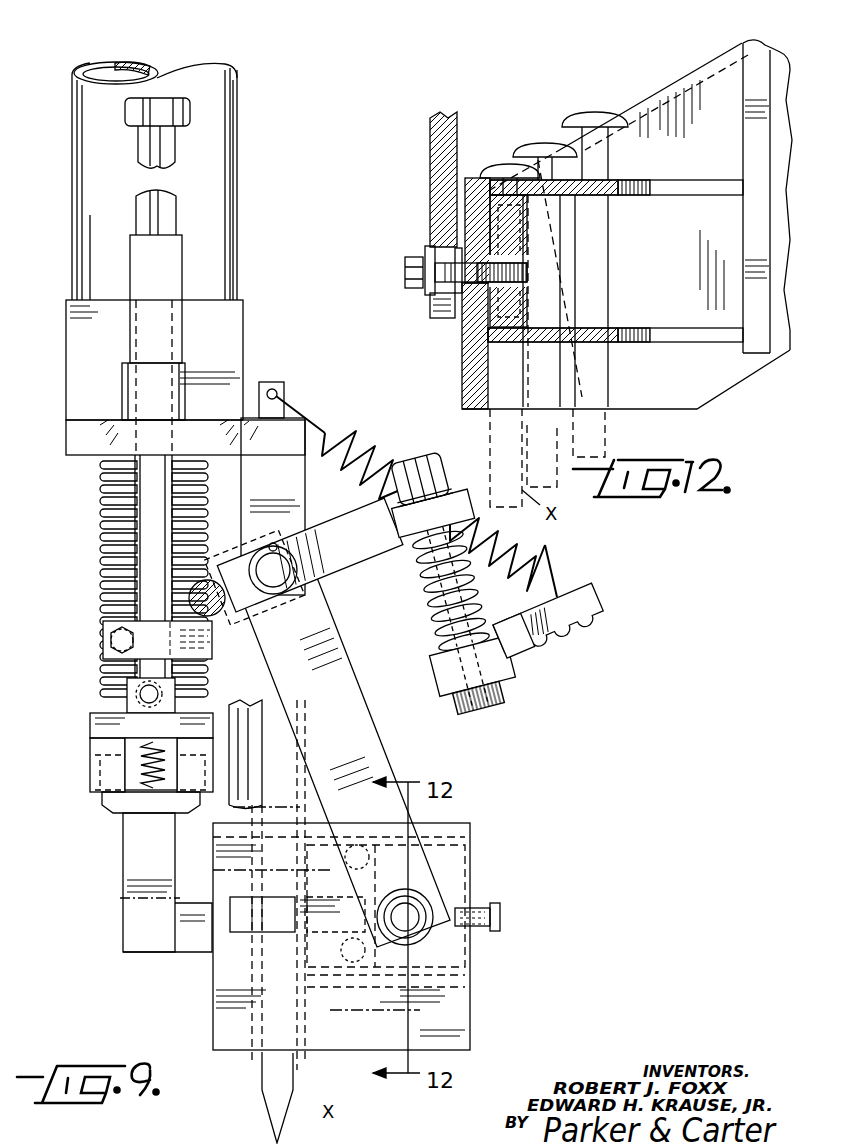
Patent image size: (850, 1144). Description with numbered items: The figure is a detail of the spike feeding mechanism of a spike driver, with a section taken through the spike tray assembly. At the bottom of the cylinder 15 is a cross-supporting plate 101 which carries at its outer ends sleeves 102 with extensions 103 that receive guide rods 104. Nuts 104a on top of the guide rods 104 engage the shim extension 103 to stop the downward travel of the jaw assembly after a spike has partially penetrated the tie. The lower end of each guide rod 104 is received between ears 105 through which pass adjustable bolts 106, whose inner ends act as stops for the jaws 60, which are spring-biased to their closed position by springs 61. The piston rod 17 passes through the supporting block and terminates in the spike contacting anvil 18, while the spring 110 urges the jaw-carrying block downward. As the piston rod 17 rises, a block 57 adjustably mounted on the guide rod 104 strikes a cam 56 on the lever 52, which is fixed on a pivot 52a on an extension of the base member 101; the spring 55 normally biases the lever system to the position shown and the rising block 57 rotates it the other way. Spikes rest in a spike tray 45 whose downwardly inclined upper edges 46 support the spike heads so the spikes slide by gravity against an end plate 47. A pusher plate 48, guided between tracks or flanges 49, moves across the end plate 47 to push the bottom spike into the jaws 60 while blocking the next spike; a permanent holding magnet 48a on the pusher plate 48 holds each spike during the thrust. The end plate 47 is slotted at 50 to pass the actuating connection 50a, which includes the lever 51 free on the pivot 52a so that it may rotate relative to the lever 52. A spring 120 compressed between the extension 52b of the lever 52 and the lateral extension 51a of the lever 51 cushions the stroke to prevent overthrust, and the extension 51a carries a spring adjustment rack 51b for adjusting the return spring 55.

In FIG. 9, the cylinder 15 is at (220, 165).
In FIG. 9, the nut 104a is at (125, 118).
In FIG. 9, the guide rod 104 is at (136, 220).
In FIG. 9, the extension 103 is at (130, 330).
In FIG. 9, the sleeve 102 is at (124, 400).
In FIG. 9, the cross-supporting plate 101 is at (66, 445).
In FIG. 9, the spring 110 is at (100, 500).
In FIG. 9, the lever 51 is at (385, 758).
In FIG. 12, the lever 51 is at (430, 168).
In FIG. 9, the cam 56 is at (212, 616).
In FIG. 9, the block 57 is at (213, 648).
In FIG. 9, the lever 52 is at (348, 568).
In FIG. 9, the pivot 52a is at (270, 553).
In FIG. 9, the extension 52b is at (440, 485).
In FIG. 9, the spring 55 is at (375, 437).
In FIG. 9, the spring 120 is at (454, 584).
In FIG. 9, the lateral extension 51a is at (432, 690).
In FIG. 9, the spring adjustment rack 51b is at (598, 600).
In FIG. 9, the ears 105 is at (128, 700).
In FIG. 9, the bolt 106 is at (160, 713).
In FIG. 9, the piston rod 17 is at (98, 760).
In FIG. 9, the spring 61 is at (141, 765).
In FIG. 9, the spike contacting anvil 18 is at (112, 810).
In FIG. 9, the jaws 60 is at (120, 910).
In FIG. 9, the spike tray 45 is at (262, 795).
In FIG. 12, the spike tray 45 is at (685, 249).
In FIG. 9, the end plate 47 is at (220, 1012).
In FIG. 12, the end plate 47 is at (464, 360).
In FIG. 9, the tracks or flanges 49 is at (458, 830).
In FIG. 12, the tracks or flanges 49 is at (598, 185).
In FIG. 9, the pusher plate 48 is at (470, 888).
In FIG. 12, the pusher plate 48 is at (532, 256).
In FIG. 9, the permanent holding magnet 48a is at (312, 920).
In FIG. 9, the slot 50 is at (242, 897).
In FIG. 12, the slot 50 is at (470, 252).
In FIG. 9, the actuating connection 50a is at (432, 922).
In FIG. 12, the actuating connection 50a is at (425, 292).
In FIG. 12, the inclined upper edges 46 is at (640, 110).